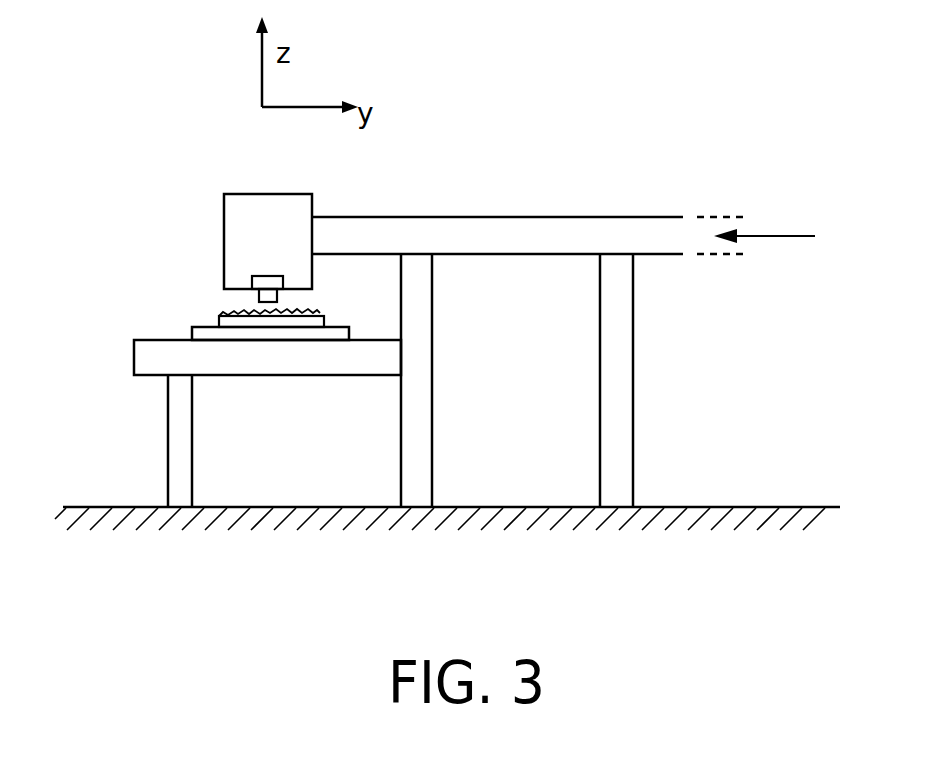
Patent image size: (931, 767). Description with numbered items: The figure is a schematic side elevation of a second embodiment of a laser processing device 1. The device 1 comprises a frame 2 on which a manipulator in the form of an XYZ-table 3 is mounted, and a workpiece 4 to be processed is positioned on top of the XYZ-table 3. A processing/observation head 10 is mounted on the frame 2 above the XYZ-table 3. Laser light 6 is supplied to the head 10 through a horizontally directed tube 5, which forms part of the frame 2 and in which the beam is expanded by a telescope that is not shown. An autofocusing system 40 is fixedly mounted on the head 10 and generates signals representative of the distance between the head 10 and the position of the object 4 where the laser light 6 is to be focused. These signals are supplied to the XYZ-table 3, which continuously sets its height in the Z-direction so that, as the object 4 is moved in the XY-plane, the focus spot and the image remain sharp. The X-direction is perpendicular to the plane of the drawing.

The laser processing device 1 is at (775, 148).
The frame 2 is at (633, 390).
The XYZ-table 3 is at (192, 328).
The workpiece 4 is at (225, 313).
The horizontally directed tube 5 is at (527, 217).
The laser light 6 is at (795, 238).
The processing/observation head 10 is at (268, 194).
The autofocusing system 40 is at (263, 282).